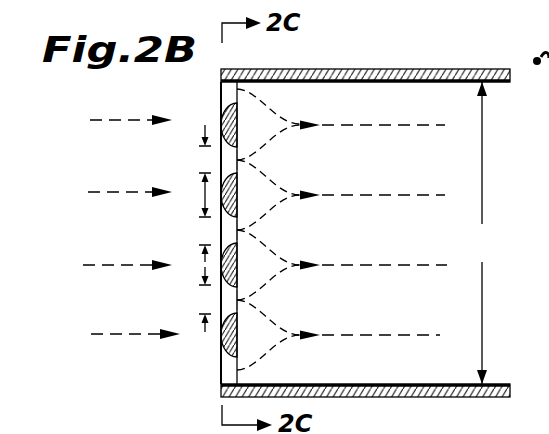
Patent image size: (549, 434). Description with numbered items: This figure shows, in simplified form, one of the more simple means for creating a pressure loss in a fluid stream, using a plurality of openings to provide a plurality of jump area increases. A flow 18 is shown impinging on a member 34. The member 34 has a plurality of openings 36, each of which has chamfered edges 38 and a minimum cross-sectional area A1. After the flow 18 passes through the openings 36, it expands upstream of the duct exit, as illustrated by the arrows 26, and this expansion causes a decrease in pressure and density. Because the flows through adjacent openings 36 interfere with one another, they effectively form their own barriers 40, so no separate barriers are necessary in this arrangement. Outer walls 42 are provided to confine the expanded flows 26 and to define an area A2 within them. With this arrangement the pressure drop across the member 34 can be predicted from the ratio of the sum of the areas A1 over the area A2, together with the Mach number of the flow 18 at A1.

The flow 18 is at (113, 347).
The arrows (expanded flows) 26 is at (277, 129).
The member 34 is at (237, 89).
The openings 36 is at (240, 227).
The chamfered edges 38 is at (225, 107).
The barriers 40 is at (367, 192).
The outer walls 42 is at (388, 69).
The minimum cross-sectional area A1 is at (186, 301).
The area defined within outer walls A2 is at (484, 233).